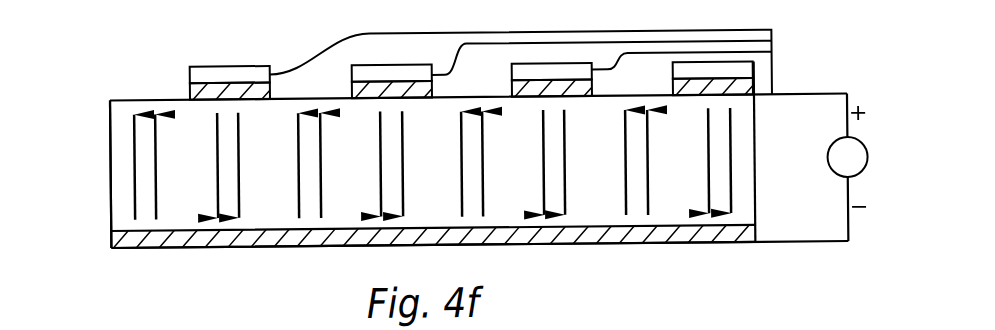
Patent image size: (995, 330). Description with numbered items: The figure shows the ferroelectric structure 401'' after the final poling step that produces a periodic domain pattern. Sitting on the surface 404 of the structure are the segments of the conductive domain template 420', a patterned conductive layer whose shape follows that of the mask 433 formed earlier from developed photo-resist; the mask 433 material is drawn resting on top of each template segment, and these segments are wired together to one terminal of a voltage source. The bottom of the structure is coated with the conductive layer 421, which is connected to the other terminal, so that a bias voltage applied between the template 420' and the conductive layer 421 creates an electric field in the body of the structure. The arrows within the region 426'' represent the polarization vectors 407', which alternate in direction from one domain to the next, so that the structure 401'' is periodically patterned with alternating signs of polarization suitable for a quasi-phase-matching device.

The surface 404 is at (128, 99).
The conductive domain template 420' is at (456, 61).
The mask 433 is at (230, 67).
The electro-optic medium region 426'' is at (72, 174).
The conductive layer 421 is at (111, 244).
The electric field lines (arrows) 407' is at (433, 213).
The structure 401'' is at (811, 151).